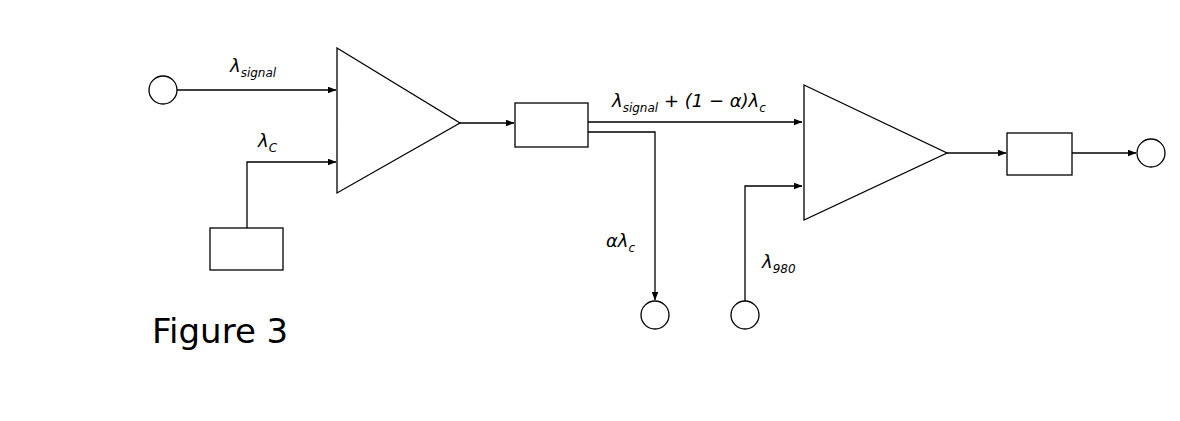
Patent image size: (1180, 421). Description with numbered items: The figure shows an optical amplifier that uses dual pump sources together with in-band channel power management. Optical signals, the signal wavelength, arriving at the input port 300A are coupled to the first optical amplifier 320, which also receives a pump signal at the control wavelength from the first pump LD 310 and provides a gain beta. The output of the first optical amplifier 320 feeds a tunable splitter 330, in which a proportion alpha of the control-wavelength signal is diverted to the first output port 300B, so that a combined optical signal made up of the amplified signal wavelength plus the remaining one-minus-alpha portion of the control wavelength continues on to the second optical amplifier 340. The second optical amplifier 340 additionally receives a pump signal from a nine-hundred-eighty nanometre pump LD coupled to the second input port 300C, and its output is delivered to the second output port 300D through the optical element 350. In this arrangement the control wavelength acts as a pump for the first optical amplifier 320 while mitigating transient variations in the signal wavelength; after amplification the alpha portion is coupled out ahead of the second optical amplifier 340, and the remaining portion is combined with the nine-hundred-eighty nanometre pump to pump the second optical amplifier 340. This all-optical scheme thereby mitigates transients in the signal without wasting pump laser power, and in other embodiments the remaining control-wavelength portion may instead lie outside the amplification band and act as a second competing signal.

The input port 300A is at (136, 90).
The first pump LD 310 is at (246, 249).
The first optical amplifier 320 is at (398, 120).
The tunable splitter 330 is at (551, 125).
The first output port 300B is at (658, 331).
The second input port 300C is at (747, 331).
The second optical amplifier 340 is at (875, 152).
The optical element 350 is at (1039, 154).
The second output port 300D is at (1151, 175).